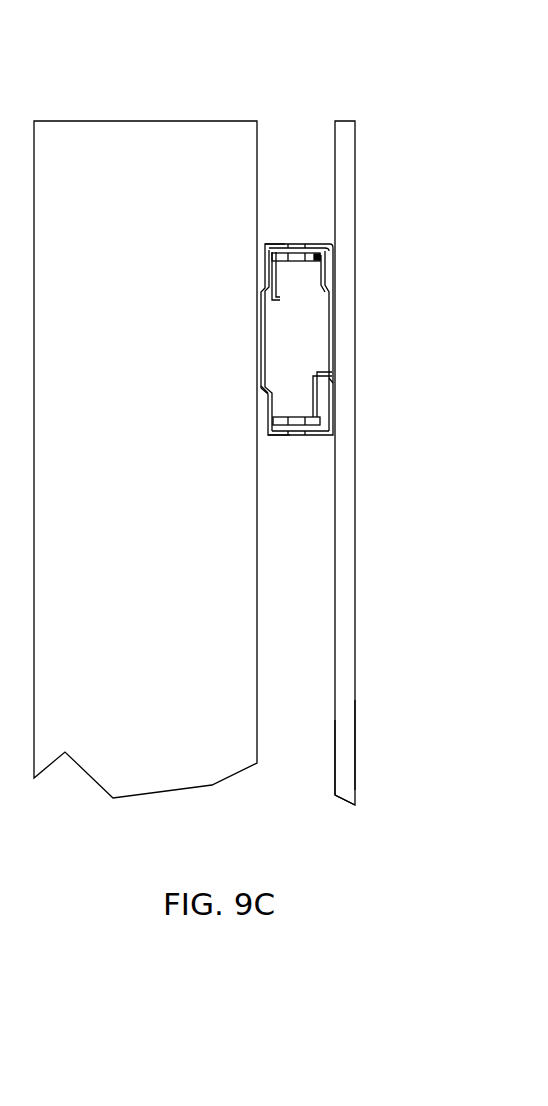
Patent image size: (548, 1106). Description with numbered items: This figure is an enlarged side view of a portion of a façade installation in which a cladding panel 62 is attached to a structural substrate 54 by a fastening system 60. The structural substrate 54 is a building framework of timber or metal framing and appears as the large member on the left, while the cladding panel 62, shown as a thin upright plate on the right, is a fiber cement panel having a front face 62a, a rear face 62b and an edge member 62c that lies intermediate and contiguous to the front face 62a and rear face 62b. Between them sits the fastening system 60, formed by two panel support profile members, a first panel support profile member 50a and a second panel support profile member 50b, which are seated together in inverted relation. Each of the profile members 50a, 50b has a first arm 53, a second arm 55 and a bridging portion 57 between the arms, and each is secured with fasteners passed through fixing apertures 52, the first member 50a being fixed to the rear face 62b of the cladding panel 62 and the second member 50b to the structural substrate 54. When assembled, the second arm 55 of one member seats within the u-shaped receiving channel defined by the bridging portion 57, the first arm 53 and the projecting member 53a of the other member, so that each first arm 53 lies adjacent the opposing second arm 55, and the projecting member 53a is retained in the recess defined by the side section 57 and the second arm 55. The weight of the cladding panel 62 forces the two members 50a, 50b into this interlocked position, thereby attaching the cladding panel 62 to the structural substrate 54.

The first panel support profile member 50a is at (325, 250).
The second panel support profile member 50b is at (322, 432).
The fixing apertures 52 is at (259, 348).
The first arm 53 is at (280, 245).
The projecting member 53a is at (259, 256).
The structural substrate 54 is at (157, 454).
The second arm 55 is at (318, 257).
The bridging portion 57 is at (258, 375).
The fastening system 60 is at (299, 138).
The cladding panel 62 is at (343, 300).
The front face 62a is at (356, 745).
The rear face 62b is at (335, 778).
The edge member 62c is at (349, 800).